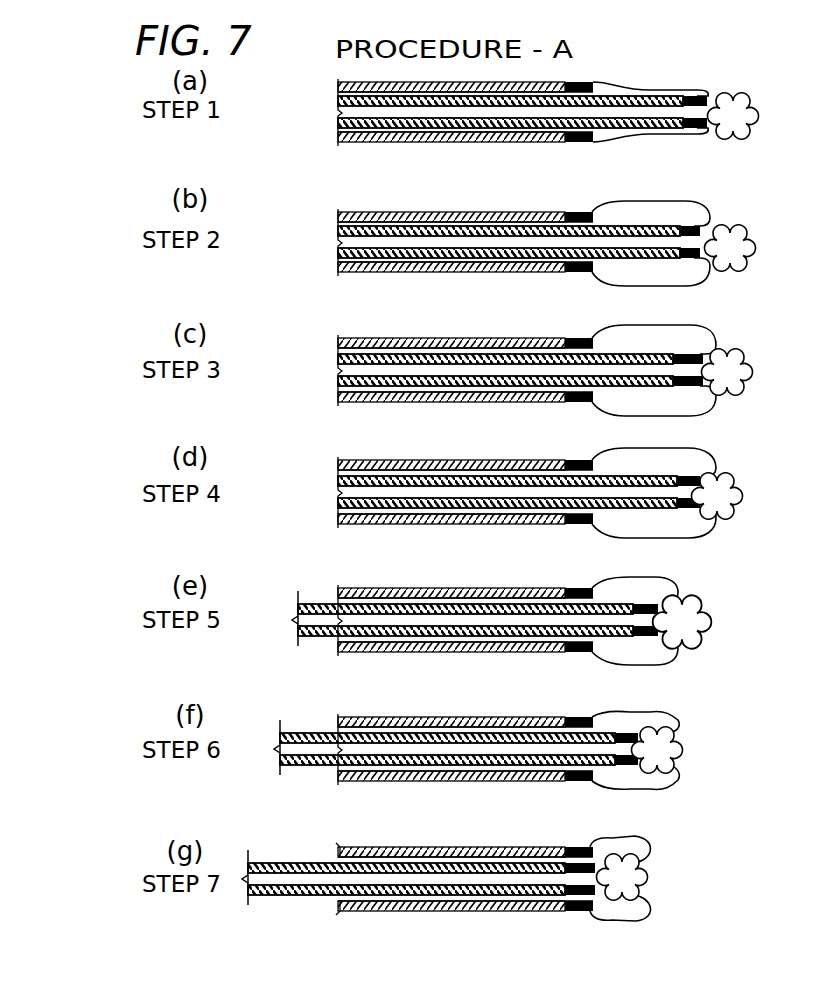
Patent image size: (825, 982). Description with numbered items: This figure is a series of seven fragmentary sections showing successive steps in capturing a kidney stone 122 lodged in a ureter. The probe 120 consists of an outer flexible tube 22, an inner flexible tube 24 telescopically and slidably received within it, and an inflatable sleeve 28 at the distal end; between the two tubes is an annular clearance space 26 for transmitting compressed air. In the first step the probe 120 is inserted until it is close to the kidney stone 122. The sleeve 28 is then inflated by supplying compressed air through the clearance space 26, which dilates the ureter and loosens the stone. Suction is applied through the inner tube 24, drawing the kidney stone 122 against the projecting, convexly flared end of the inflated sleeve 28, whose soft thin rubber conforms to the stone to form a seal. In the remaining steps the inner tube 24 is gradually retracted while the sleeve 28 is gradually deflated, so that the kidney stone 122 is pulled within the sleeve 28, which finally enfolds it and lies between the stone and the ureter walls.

The outer flexible tube 22 is at (354, 84).
The inner flexible tube 24 is at (418, 96).
The annular clearance space 26 is at (490, 92).
The inflatable sleeve 28 is at (660, 88).
The probe 120 is at (687, 472).
The kidney stone 122 is at (751, 131).